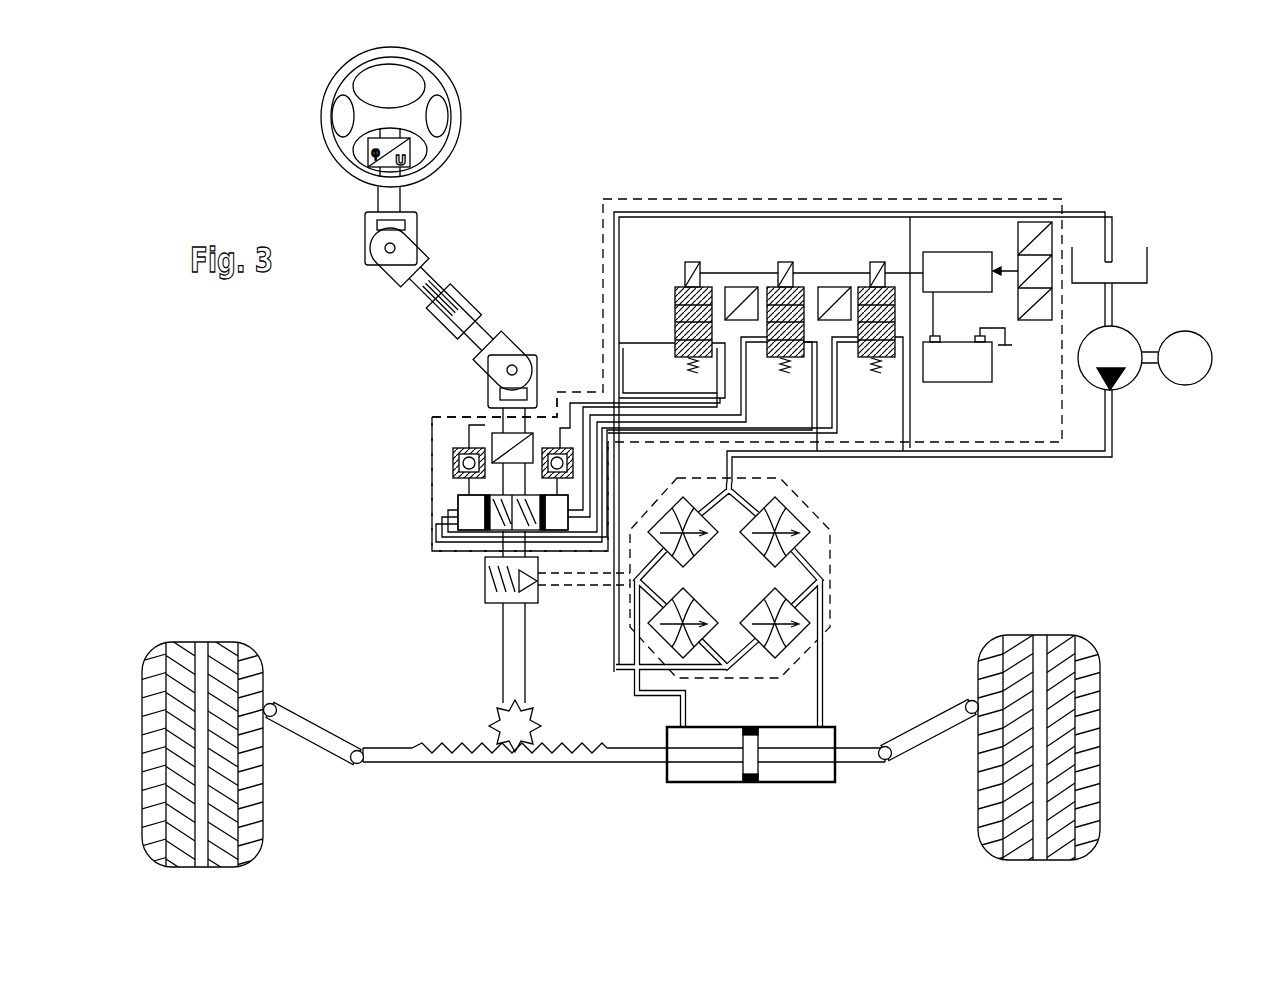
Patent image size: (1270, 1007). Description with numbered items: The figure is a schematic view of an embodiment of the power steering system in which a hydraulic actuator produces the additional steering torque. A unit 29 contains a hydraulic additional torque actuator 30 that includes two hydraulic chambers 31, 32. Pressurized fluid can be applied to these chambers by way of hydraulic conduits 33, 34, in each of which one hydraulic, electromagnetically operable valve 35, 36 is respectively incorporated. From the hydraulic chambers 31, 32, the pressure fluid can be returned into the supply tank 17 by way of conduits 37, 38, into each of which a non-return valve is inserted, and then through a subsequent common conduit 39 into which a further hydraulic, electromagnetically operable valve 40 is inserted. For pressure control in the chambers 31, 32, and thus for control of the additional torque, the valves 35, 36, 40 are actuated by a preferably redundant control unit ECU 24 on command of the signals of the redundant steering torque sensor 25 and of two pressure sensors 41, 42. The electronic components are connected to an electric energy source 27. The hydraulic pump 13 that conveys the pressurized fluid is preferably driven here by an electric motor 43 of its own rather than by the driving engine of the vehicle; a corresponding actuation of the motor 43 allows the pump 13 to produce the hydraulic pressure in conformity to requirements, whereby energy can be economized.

The hydraulic pump 13 is at (1130, 386).
The supply tank 17 is at (1147, 262).
The control unit ECU 24 is at (957, 252).
The steering torque sensor 25 is at (505, 432).
The electric energy source 27 is at (957, 383).
The unit 29 is at (686, 199).
The hydraulic additional torque actuator 30 is at (464, 548).
The hydraulic chamber 31 is at (472, 528).
The hydraulic chamber 32 is at (556, 528).
The hydraulic conduit 33 is at (683, 440).
The hydraulic conduit 34 is at (748, 357).
The electromagnetically operable valve 35 is at (805, 290).
The electromagnetically operable valve 36 is at (898, 292).
The conduit 37 is at (460, 437).
The conduit 38 is at (548, 423).
The common conduit 39 is at (655, 342).
The electromagnetically operable valve 40 is at (675, 298).
The pressure sensor 41 is at (740, 287).
The pressure sensor 42 is at (838, 287).
The electric motor 43 is at (1188, 385).